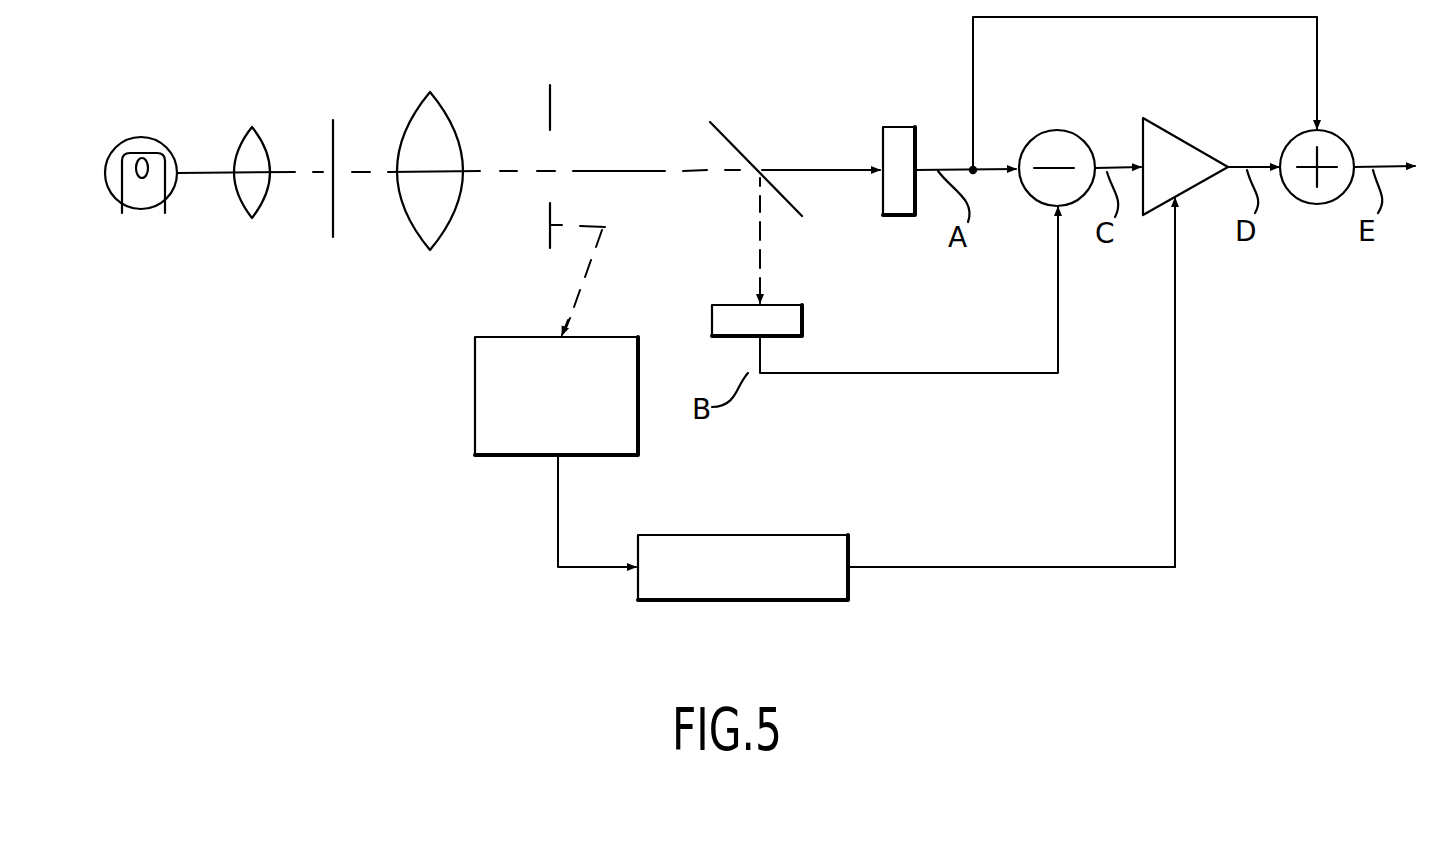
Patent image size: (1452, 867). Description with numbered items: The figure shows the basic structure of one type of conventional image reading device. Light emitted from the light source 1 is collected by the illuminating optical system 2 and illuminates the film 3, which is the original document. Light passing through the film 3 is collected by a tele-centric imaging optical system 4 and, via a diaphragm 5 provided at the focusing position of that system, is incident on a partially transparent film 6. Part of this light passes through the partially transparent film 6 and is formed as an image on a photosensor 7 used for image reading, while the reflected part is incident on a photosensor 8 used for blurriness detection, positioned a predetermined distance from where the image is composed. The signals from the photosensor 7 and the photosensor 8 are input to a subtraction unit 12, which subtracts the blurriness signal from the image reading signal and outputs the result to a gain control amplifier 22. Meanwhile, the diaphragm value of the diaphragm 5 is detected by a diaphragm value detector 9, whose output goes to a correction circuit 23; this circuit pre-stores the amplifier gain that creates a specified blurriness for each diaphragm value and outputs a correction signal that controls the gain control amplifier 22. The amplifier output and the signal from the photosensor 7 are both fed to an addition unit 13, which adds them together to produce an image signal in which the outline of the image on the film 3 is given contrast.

The light source 1 is at (140, 137).
The illuminating optical system 2 is at (260, 134).
The film 3 is at (335, 136).
The tele-centric imaging optical system 4 is at (450, 117).
The diaphragm 5 is at (553, 115).
The partially transparent film 6 is at (727, 136).
The photosensor used for image reading 7 is at (900, 127).
The photosensor used for blurriness detection 8 is at (730, 305).
The diaphragm value detector 9 is at (475, 398).
The subtraction unit 12 is at (1053, 131).
The addition unit 13 is at (1337, 133).
The gain control amplifier 22 is at (1198, 147).
The correction circuit 23 is at (795, 535).